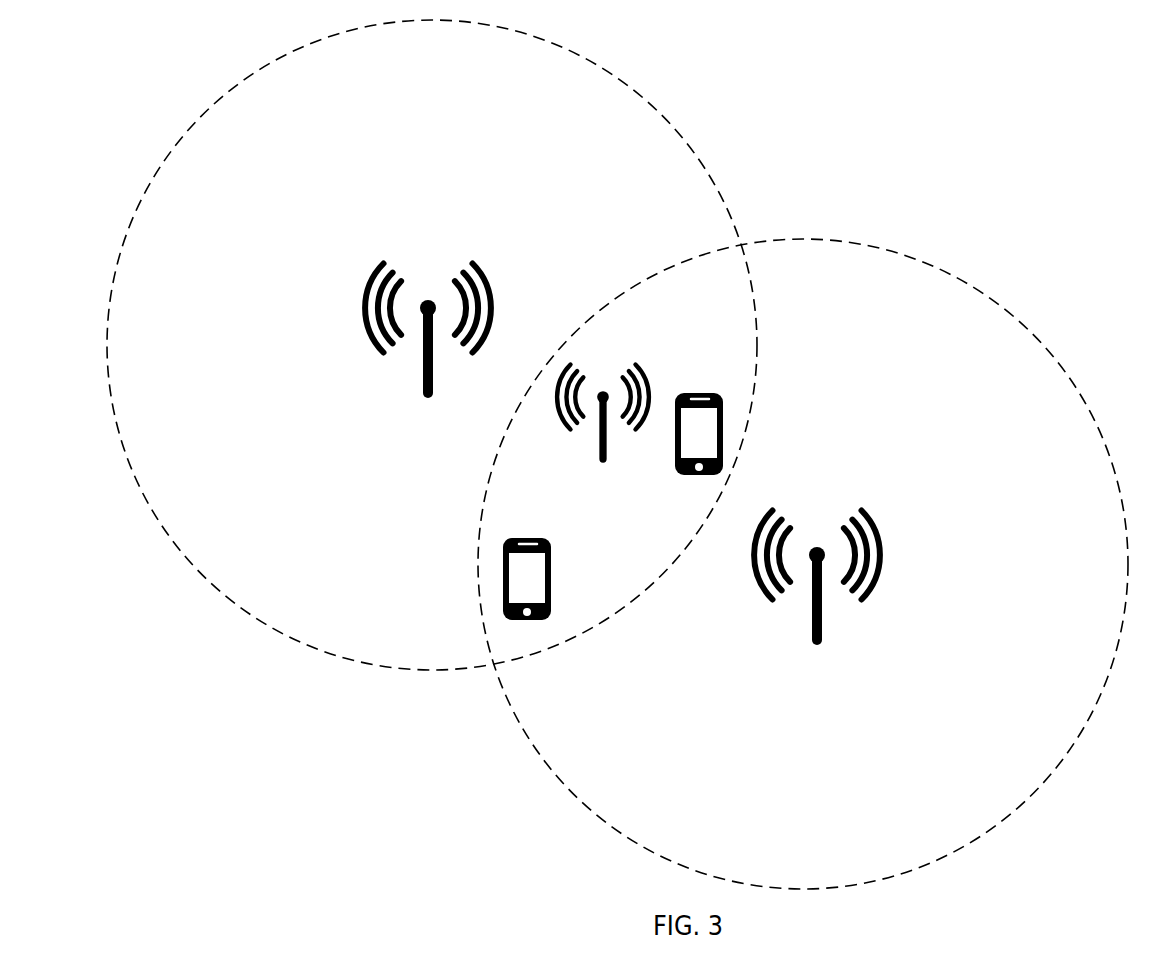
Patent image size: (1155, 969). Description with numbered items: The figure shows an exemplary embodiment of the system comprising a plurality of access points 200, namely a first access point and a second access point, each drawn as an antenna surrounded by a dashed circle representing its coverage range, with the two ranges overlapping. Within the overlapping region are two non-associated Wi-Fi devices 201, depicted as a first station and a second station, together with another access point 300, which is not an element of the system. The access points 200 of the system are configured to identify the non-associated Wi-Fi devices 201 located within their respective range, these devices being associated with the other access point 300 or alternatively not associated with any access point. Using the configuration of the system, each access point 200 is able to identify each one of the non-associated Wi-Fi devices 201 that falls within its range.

The access point 200 is at (412, 360).
The non-associated Wi-Fi device 201 is at (688, 435).
The another access point 300 is at (600, 432).